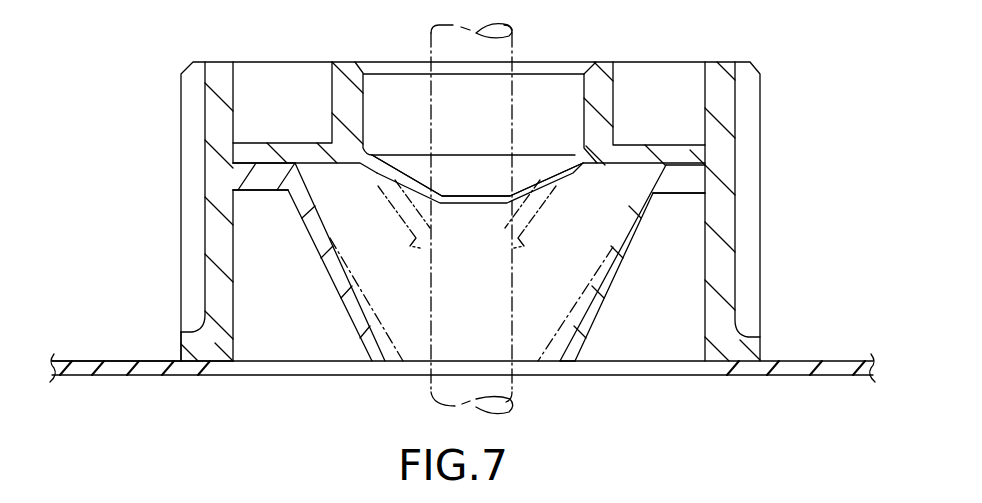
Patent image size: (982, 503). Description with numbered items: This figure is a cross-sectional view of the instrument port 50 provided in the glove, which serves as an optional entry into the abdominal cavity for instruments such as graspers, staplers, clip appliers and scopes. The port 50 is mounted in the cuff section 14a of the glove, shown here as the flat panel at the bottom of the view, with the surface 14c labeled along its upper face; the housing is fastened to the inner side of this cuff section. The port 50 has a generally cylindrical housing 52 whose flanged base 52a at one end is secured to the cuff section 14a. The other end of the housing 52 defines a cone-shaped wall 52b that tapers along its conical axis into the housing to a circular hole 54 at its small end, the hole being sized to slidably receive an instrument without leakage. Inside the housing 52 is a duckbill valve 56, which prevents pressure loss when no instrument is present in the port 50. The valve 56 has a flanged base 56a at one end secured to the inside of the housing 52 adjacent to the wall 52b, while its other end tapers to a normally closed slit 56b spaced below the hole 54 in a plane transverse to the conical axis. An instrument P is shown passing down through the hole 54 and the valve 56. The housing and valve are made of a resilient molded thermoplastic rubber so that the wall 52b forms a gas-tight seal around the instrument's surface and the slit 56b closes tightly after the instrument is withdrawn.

The pin P is at (518, 48).
The instrument port 50 is at (464, 221).
The housing 52 is at (181, 188).
The flanged base 52a is at (193, 342).
The cone-shaped wall 52b is at (558, 182).
The circular hole 54 is at (492, 198).
The duckbill valve 56 is at (600, 276).
The flanged base 56a is at (690, 178).
The slit 56b is at (553, 363).
The cuff section 14a is at (148, 367).
The panel top surface 14c is at (92, 358).